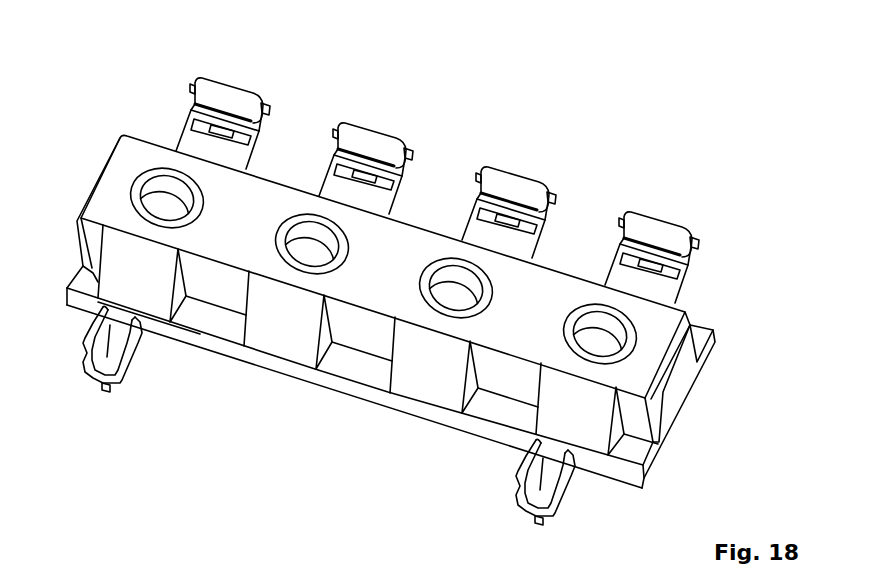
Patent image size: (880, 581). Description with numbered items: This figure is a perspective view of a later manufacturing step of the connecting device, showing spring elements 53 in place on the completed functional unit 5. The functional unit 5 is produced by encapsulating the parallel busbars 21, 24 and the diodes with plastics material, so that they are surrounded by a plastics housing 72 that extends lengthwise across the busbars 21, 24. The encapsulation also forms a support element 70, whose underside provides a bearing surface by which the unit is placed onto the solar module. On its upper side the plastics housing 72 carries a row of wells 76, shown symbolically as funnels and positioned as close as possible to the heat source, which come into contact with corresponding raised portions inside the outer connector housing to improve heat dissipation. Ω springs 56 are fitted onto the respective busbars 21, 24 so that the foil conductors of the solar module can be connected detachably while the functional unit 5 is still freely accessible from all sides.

The functional unit 5 is at (83, 49).
The busbar 21 is at (178, 140).
The busbar 24 is at (676, 294).
The spring element 53 is at (128, 353).
The Ω spring 56 is at (227, 93).
The support element 70 is at (673, 398).
The plastics housing 72 is at (527, 330).
The well 76 is at (152, 193).